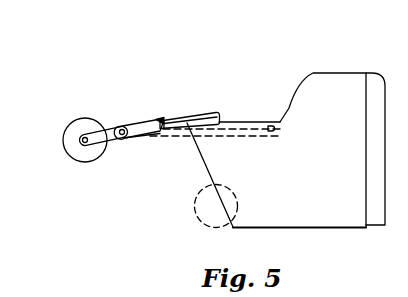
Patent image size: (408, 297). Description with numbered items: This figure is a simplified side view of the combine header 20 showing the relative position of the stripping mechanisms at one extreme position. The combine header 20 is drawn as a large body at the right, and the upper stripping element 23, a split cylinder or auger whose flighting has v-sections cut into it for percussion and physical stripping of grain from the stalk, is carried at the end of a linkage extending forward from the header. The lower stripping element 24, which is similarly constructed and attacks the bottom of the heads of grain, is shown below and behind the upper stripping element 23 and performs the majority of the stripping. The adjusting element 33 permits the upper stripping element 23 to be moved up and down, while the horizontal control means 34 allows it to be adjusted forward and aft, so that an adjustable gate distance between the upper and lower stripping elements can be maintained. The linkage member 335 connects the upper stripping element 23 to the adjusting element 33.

The combine header 20 is at (334, 60).
The upper stripping element 23 is at (93, 117).
The pivot arm 335 is at (142, 119).
The adjusting element 33 is at (203, 114).
The horizontal control means 34 is at (250, 140).
The lower stripping element 24 is at (200, 218).